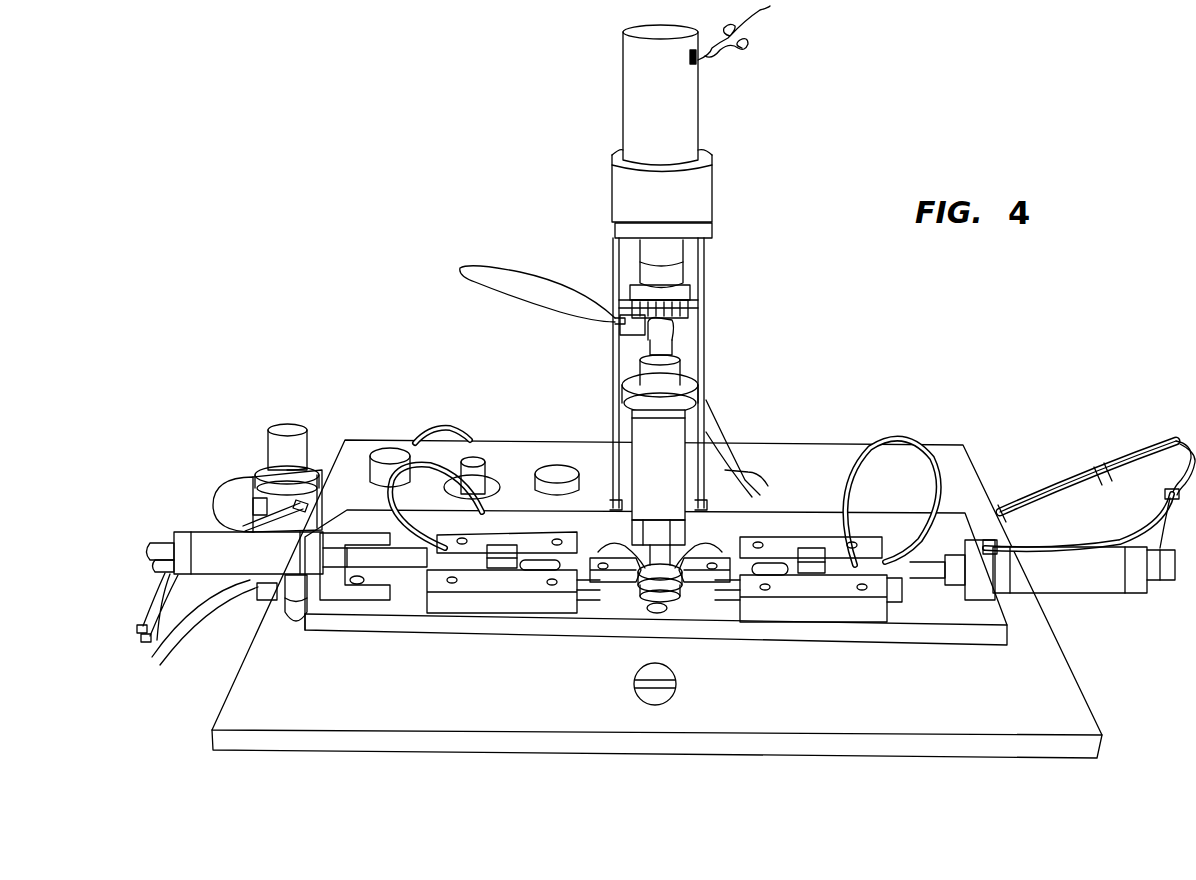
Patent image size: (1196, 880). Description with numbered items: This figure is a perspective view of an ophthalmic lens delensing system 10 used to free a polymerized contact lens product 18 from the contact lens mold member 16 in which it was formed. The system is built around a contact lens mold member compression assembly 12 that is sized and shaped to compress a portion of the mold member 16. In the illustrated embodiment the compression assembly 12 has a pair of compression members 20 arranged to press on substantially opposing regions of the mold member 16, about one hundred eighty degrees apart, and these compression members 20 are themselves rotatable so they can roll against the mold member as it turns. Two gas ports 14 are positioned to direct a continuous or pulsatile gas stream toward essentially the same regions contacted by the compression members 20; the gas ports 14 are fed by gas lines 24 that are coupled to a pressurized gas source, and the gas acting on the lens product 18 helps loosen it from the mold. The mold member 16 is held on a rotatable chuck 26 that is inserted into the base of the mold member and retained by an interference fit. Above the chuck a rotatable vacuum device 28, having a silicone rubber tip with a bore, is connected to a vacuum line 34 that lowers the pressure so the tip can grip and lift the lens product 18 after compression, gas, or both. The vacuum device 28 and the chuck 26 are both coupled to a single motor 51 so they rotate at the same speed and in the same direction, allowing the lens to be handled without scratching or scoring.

The delensing system 10 is at (440, 100).
The contact lens mold member compression assembly 12 is at (728, 546).
The gas ports 14 is at (622, 592).
The contact lens mold member 16 is at (645, 590).
The polymerized contact lens product 18 is at (670, 595).
The compression members 20 is at (622, 548).
The gas lines 24 is at (416, 442).
The chuck 26 is at (648, 608).
The vacuum device 28 is at (657, 545).
The vacuum line 34 is at (465, 268).
The motor 51 is at (675, 95).